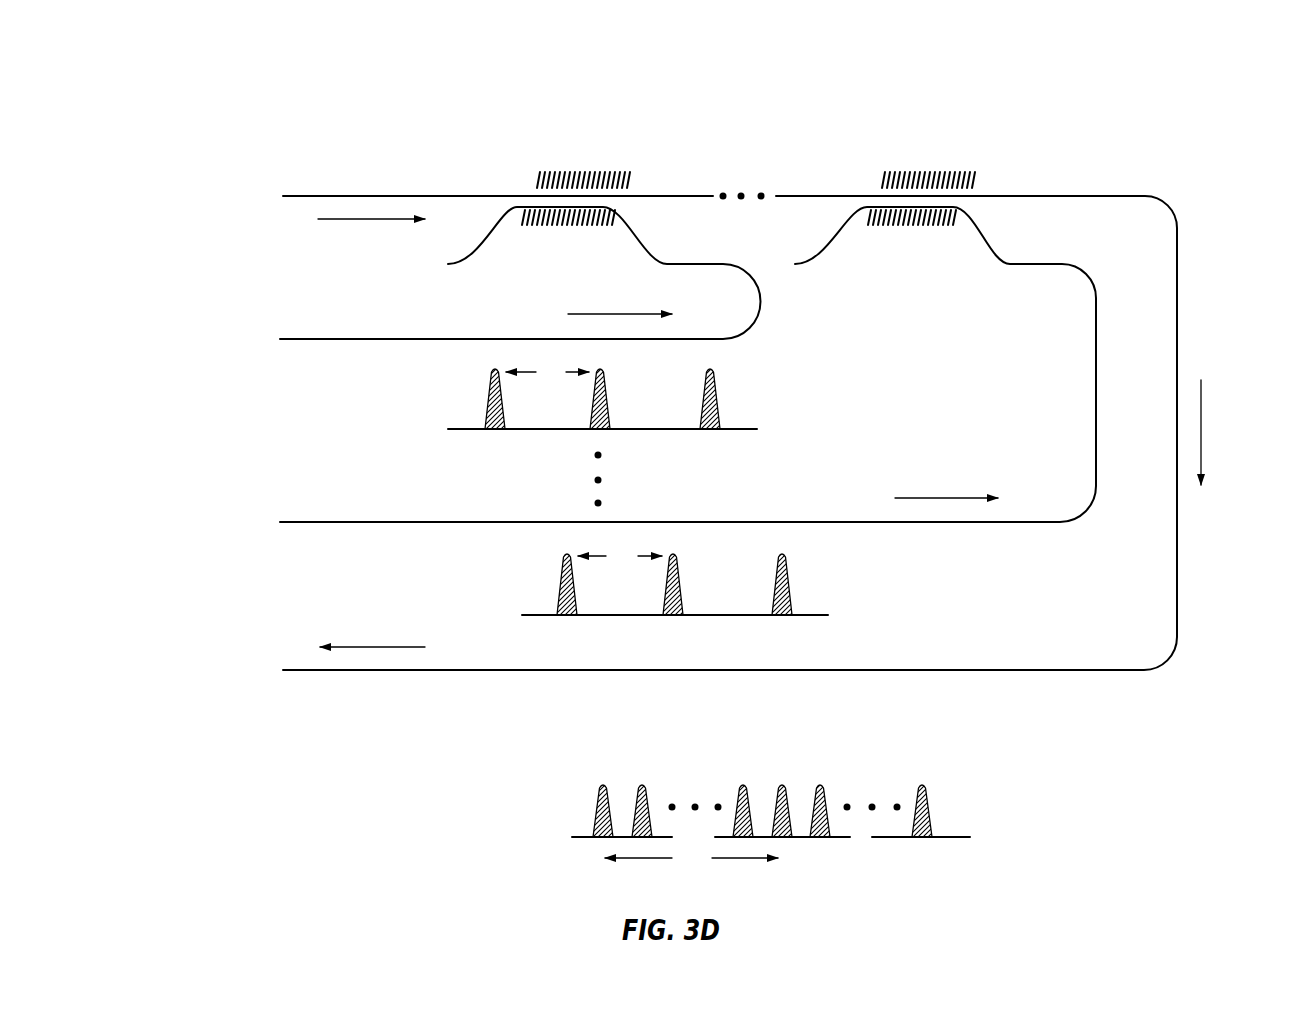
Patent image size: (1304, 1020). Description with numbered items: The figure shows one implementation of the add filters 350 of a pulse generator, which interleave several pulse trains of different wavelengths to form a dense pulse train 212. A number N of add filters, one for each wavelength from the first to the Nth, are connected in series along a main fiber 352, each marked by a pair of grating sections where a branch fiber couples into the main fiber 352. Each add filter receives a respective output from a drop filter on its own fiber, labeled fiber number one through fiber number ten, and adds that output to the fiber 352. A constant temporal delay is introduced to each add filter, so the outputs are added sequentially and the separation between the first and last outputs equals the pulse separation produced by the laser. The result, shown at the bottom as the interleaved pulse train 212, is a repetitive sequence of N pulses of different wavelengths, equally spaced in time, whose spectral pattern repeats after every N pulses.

The add filters 350 is at (215, 123).
The fiber 352 is at (315, 197).
The dense pulse train 212 is at (593, 838).